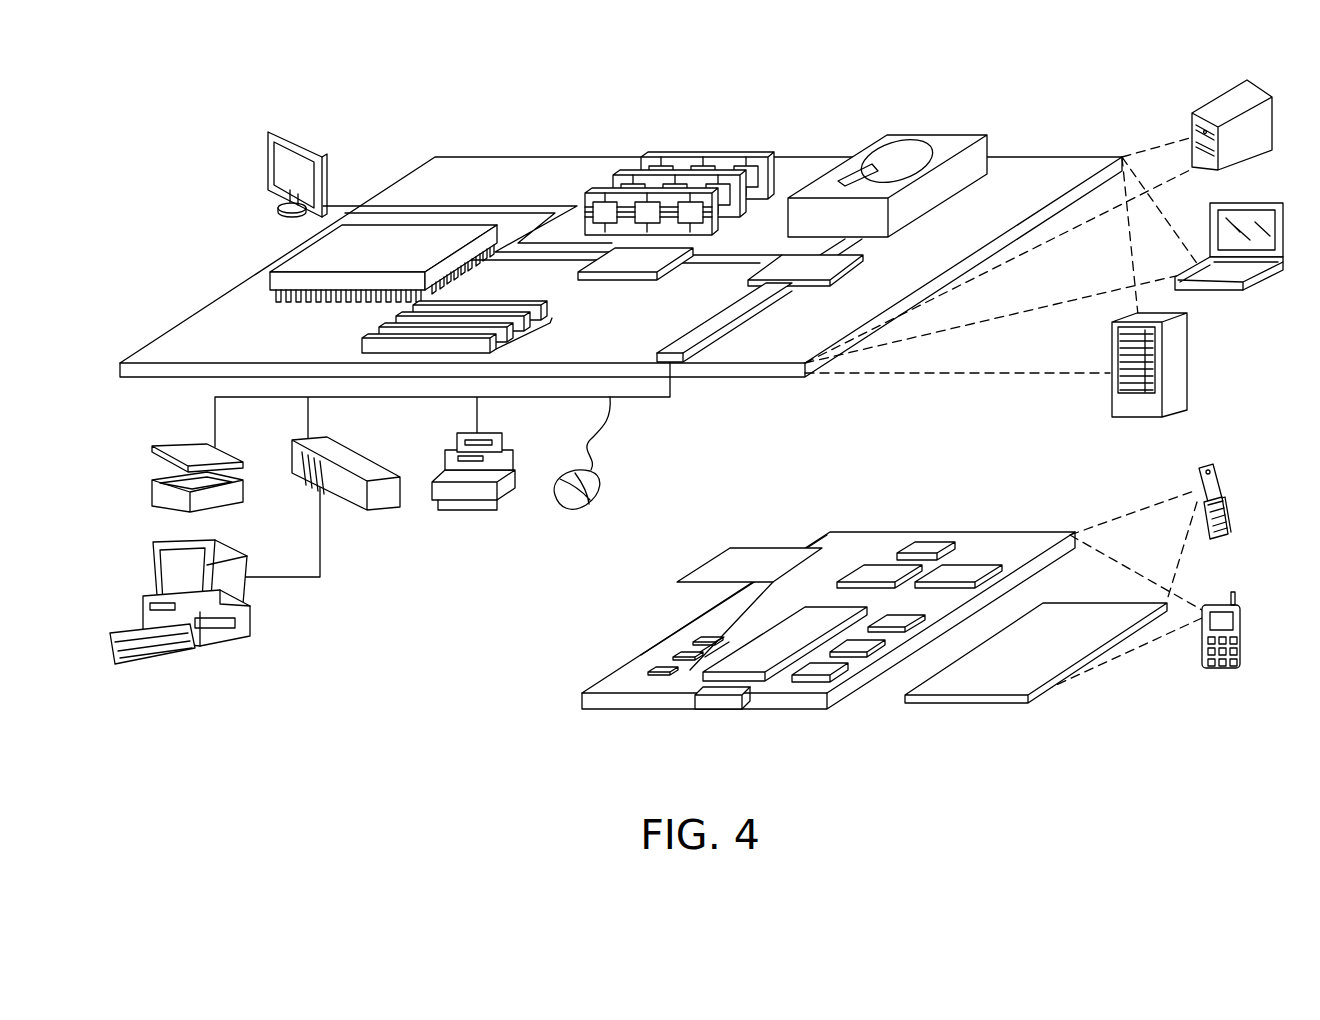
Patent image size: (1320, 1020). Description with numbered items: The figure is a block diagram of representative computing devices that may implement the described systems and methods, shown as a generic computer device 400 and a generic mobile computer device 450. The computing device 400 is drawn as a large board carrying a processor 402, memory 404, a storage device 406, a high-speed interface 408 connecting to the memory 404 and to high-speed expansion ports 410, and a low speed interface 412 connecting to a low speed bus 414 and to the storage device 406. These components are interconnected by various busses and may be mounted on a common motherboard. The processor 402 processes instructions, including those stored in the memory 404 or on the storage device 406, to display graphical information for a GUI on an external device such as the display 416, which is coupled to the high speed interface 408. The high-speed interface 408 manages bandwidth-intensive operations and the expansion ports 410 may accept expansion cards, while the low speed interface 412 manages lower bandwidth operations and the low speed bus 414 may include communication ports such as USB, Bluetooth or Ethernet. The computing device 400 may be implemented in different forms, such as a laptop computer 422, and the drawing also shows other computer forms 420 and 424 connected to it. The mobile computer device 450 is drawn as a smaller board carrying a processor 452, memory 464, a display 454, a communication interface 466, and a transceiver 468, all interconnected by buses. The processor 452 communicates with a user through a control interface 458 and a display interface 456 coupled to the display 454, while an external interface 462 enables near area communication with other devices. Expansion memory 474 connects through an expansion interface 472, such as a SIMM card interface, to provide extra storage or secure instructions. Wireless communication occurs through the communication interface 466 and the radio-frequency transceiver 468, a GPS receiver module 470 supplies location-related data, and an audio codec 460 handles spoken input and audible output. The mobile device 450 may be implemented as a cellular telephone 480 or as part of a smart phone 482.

The computing device 400 is at (392, 108).
The processor 402 is at (292, 258).
The memory 404 is at (710, 155).
The storage device 406 is at (926, 138).
The high-speed interface 408 is at (648, 258).
The high-speed expansion ports 410 is at (381, 327).
The low speed interface 412 is at (782, 264).
The low speed bus 414 is at (675, 349).
The display 416 is at (271, 133).
The remote computer 420 is at (1210, 109).
The laptop computer 422 is at (1258, 202).
The server 424 is at (1190, 362).
The mobile computer device 450 is at (540, 714).
The processor 452 is at (757, 644).
The display 454 is at (1070, 619).
The display interface 456 is at (838, 676).
The control interface 458 is at (866, 650).
The audio codec 460 is at (898, 620).
The external interface 462 is at (720, 699).
The memory 464 is at (674, 660).
The communication interface 466 is at (880, 566).
The transceiver 468 is at (964, 566).
The GPS receiver module 470 is at (930, 545).
The expansion interface 472 is at (808, 548).
The expansion memory 474 is at (733, 548).
The cellular telephone 480 is at (1206, 466).
The smart phone 482 is at (1213, 605).